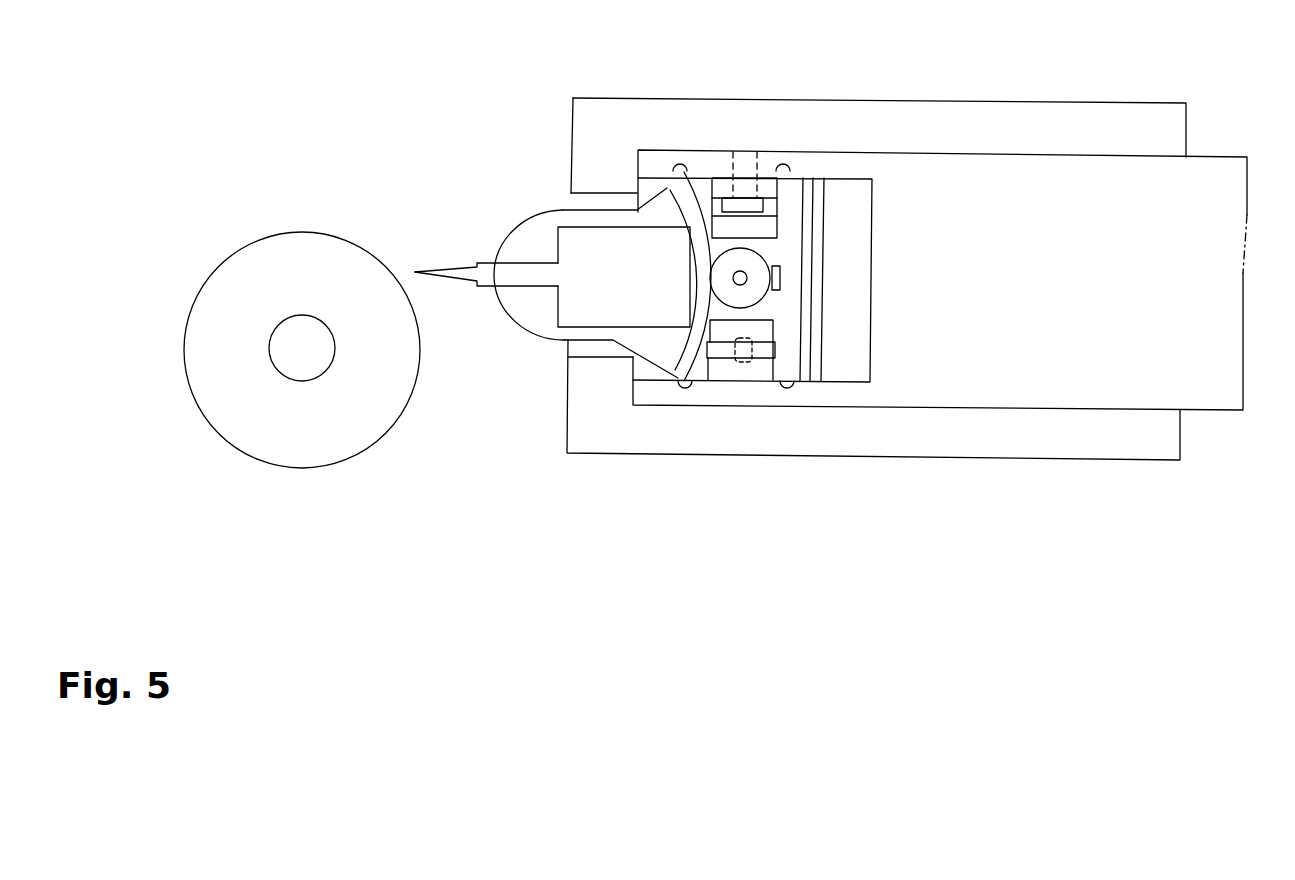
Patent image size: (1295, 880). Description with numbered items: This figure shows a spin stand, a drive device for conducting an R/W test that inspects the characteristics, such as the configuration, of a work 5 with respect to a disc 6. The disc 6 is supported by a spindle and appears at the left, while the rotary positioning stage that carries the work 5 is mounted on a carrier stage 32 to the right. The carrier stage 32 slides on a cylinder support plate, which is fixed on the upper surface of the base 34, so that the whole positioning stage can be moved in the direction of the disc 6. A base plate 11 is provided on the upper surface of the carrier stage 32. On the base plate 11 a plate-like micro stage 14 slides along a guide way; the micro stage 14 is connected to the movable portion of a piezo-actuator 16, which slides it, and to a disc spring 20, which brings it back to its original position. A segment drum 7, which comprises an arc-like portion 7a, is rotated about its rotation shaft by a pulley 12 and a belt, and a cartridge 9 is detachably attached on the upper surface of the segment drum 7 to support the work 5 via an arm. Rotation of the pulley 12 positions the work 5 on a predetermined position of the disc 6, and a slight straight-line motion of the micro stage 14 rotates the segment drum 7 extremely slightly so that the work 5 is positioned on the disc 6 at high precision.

The work 5 is at (414, 271).
The disc 6 is at (287, 253).
The segment drum 7 is at (530, 237).
The arc-like portion 7a is at (666, 190).
The cartridge 9 is at (592, 287).
The base plate 11 is at (847, 202).
The pulley 12 is at (752, 262).
The micro stage 14 is at (793, 200).
The piezo-actuator 16 is at (747, 168).
The disc spring 20 is at (738, 348).
The carrier stage 32 is at (1210, 182).
The base 34 is at (1050, 440).